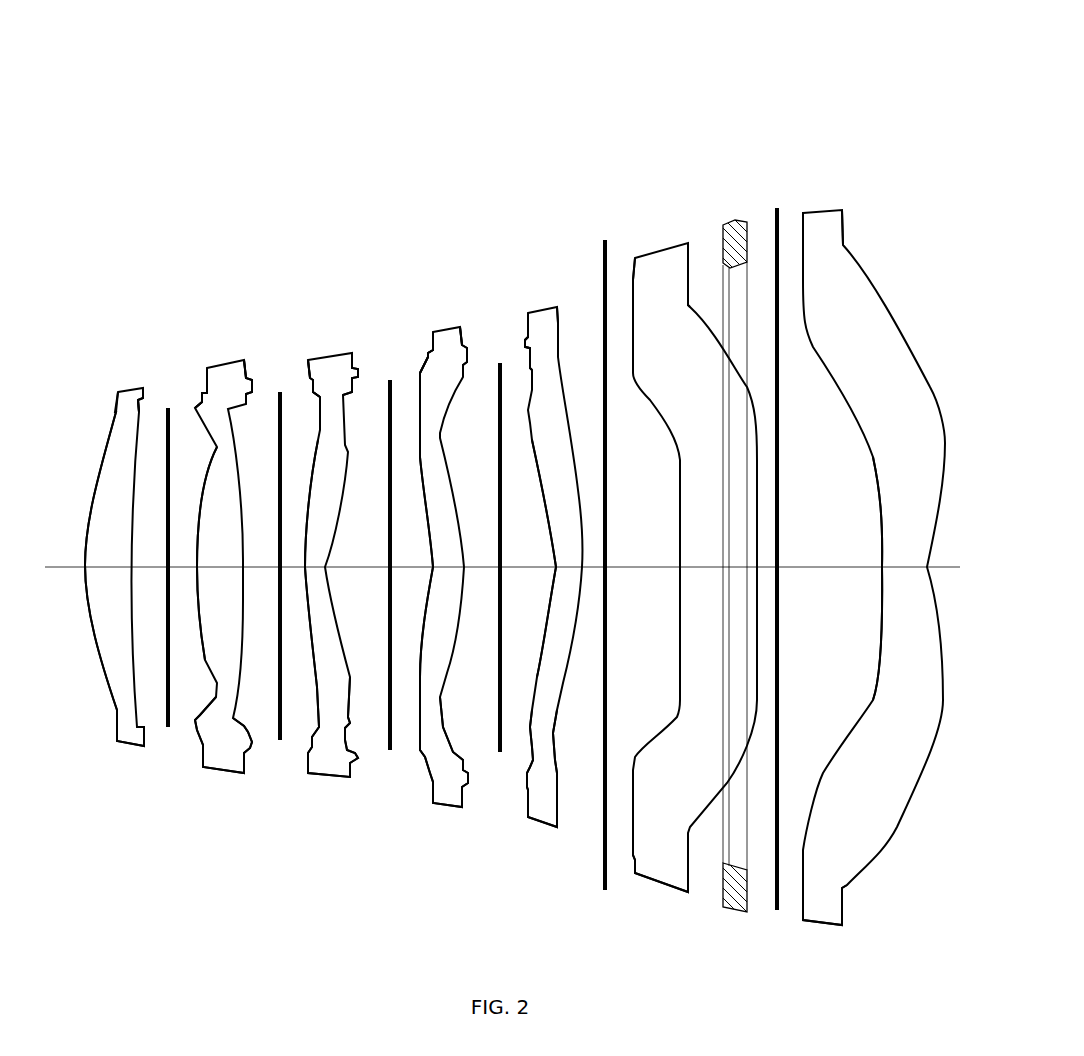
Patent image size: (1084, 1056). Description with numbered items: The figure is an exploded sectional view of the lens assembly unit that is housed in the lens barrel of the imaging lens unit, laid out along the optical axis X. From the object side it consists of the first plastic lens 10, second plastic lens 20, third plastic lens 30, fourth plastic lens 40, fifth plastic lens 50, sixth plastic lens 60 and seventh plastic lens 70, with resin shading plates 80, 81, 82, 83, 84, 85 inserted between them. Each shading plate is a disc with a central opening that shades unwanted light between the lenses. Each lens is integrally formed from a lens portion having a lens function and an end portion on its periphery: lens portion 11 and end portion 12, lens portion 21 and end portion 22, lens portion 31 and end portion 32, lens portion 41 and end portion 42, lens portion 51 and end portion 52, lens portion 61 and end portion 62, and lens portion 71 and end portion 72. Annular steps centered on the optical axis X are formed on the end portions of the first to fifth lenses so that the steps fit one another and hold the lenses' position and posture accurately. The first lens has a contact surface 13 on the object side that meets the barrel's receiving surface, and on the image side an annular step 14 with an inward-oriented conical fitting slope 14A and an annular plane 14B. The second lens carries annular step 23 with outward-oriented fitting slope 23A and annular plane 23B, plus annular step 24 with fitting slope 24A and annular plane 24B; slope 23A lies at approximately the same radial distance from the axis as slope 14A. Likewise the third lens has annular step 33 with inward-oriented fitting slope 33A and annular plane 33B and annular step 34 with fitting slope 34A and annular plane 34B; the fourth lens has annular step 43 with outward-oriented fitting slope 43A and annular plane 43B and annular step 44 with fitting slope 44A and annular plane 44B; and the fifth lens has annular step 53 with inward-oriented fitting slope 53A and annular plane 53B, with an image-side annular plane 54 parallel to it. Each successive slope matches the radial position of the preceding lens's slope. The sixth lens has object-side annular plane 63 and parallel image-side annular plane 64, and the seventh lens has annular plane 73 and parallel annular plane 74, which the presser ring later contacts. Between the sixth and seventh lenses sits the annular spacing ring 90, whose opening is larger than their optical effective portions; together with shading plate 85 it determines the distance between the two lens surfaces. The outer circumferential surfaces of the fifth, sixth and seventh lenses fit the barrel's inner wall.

The optical axis X is at (72, 567).
The first plastic lens 10 is at (104, 559).
The lens portion 11 is at (108, 572).
The end portion 12 is at (130, 735).
The contact surface 13 is at (115, 412).
The annular step 14 is at (103, 312).
The fitting slope 14A is at (143, 410).
The annular plane 14B is at (143, 407).
The second plastic lens 20 is at (209, 509).
The lens portion 21 is at (220, 570).
The end portion 22 is at (223, 760).
The annular step 23 is at (161, 250).
The fitting slope 23A is at (198, 402).
The annular plane 23B is at (200, 400).
The annular step 24 is at (229, 193).
The fitting slope 24A is at (255, 383).
The annular plane 24B is at (247, 382).
The third plastic lens 30 is at (347, 515).
The lens portion 31 is at (315, 577).
The end portion 32 is at (327, 768).
The annular step 33 is at (309, 255).
The fitting slope 33A is at (313, 392).
The annular plane 33B is at (355, 378).
The annular step 34 is at (354, 244).
The fitting slope 34A is at (358, 375).
The annular plane 34B is at (352, 378).
The fourth plastic lens 40 is at (438, 461).
The lens portion 41 is at (443, 577).
The end portion 42 is at (445, 797).
The annular step 43 is at (404, 125).
The fitting slope 43A is at (421, 372).
The annular plane 43B is at (427, 357).
The annular step 44 is at (452, 60).
The fitting slope 44A is at (467, 343).
The annular plane 44B is at (463, 345).
The fifth plastic lens 50 is at (541, 514).
The lens portion 51 is at (567, 573).
The end portion 52 is at (542, 817).
The annular step 53 is at (552, 170).
The fitting slope 53A is at (525, 347).
The annular plane 53B is at (525, 342).
The annular plane 54 is at (558, 345).
The sixth plastic lens 60 is at (680, 563).
The lens portion 61 is at (705, 575).
The end portion 62 is at (657, 875).
The annular plane 63 is at (632, 302).
The annular plane 64 is at (688, 268).
The seventh plastic lens 70 is at (857, 561).
The lens portion 71 is at (905, 573).
The end portion 72 is at (820, 913).
The annular plane 73 is at (802, 248).
The annular plane 74 is at (843, 232).
The shading plate 80 is at (168, 715).
The shading plate 81 is at (270, 740).
The shading plate 82 is at (387, 742).
The shading plate 83 is at (498, 755).
The shading plate 84 is at (603, 862).
The shading plate 85 is at (775, 905).
The spacing ring 90 is at (740, 220).